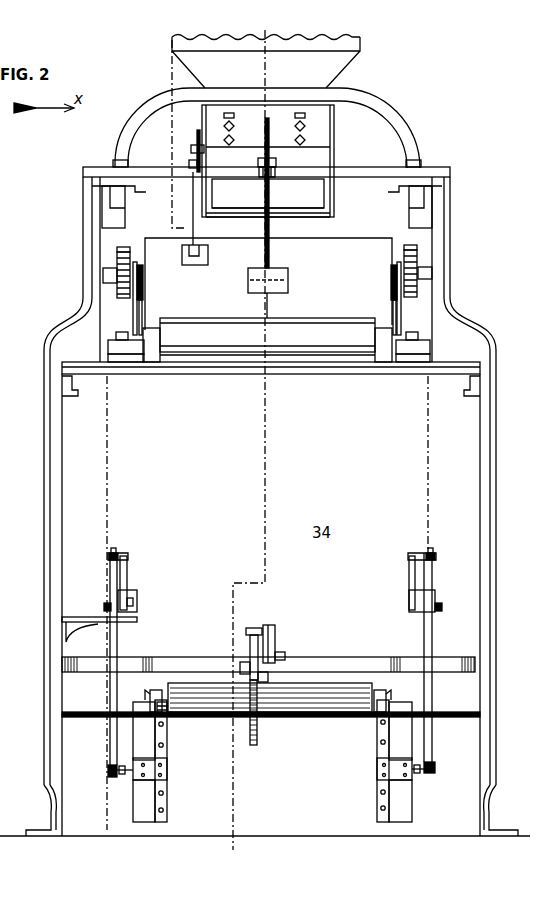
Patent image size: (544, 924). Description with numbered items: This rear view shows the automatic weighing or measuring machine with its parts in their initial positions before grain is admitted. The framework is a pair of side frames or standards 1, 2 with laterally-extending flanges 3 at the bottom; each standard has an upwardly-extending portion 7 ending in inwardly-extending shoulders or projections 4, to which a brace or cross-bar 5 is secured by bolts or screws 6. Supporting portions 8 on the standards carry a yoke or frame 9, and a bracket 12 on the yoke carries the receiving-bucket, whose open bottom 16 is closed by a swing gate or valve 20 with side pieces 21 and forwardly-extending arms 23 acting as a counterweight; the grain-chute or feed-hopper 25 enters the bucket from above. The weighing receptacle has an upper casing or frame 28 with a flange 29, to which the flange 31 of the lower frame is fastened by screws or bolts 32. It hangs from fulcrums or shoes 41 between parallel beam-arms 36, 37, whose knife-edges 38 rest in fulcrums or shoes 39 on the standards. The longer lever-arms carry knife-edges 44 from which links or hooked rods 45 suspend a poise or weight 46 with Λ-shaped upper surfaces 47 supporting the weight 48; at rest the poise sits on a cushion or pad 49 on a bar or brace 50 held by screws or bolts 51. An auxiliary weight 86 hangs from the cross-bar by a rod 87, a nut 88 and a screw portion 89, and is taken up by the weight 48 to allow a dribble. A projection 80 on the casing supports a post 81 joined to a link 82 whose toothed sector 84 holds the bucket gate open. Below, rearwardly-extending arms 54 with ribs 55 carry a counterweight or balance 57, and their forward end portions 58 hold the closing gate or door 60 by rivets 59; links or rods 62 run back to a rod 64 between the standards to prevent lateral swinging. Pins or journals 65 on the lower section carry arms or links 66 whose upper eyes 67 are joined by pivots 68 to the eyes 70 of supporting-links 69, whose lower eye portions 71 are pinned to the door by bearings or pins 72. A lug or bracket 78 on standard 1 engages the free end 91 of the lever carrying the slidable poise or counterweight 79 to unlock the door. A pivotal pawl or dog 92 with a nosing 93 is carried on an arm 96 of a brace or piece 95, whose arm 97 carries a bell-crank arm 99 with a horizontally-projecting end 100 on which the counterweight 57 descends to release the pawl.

The side frame or standard 1 is at (50, 484).
The side frame or standard 2 is at (480, 483).
The laterally-extending flange 3 is at (505, 828).
The inwardly-extending shoulder or projection 4 is at (396, 185).
The brace or cross-bar 5 is at (374, 172).
The bolt or screw 6 is at (113, 165).
The upwardly-extending portion 7 is at (88, 203).
The supporting portion 8 is at (120, 222).
The yoke or frame 9 is at (147, 107).
The bracket 12 is at (310, 129).
The open bottom 16 is at (312, 212).
The swing gate or valve 20 is at (238, 214).
The side piece 21 is at (206, 192).
The forwardly-extending arm 23 is at (336, 128).
The grain-chute or feed-hopper 25 is at (340, 67).
The upper casing or frame 28 is at (268, 284).
The flange 29 is at (110, 348).
The flange of lower frame 31 is at (110, 358).
The screw or bolt 32 is at (433, 337).
The beam-arm 36 is at (120, 288).
The beam-arm 37 is at (417, 290).
The knife-edge 38 is at (117, 265).
The fulcrum or shoe 39 is at (103, 277).
The fulcrum or shoe 41 is at (138, 266).
The knife-edge 44 is at (144, 283).
The link or hooked rod 45 is at (143, 300).
The poise or weight 46 is at (200, 355).
The Λ-shaped upper surface 47 is at (153, 327).
The weight 48 is at (224, 330).
The cushion or pad 49 is at (327, 375).
The bar or brace 50 is at (292, 375).
The screw or bolt 51 is at (76, 388).
The rearwardly-extending arm 54 is at (167, 714).
The rib 55 is at (157, 692).
The counterweight or balance 57 is at (270, 697).
The forward end portion 58 is at (168, 785).
The rivet 59 is at (165, 746).
The closing gate or door 60 is at (272, 801).
The link or rod 62 is at (153, 712).
The rod 64 is at (271, 705).
The pin or journal 65 is at (105, 607).
The arm or link 66 is at (128, 578).
The upper eye 67 is at (128, 563).
The pivot 68 is at (108, 559).
The supporting-link 69 is at (110, 585).
The eye 70 is at (114, 552).
The lower eye portion 71 is at (112, 778).
The bearing or pin 72 is at (107, 770).
The lug or bracket 78 is at (96, 624).
The poise or counterweight 79 is at (138, 593).
The projection 80 is at (204, 268).
The post 81 is at (190, 163).
The link 82 is at (204, 150).
The toothed sector 84 is at (195, 142).
The auxiliary weight 86 is at (290, 282).
The rod 87 is at (271, 253).
The nut 88 is at (277, 161).
The screw portion 89 is at (265, 139).
The free end 91 is at (134, 602).
The pivotal pawl or dog 92 is at (250, 623).
The nosing 93 is at (268, 677).
The brace or piece 95 is at (285, 655).
The arm 96 is at (276, 632).
The arm 97 is at (245, 653).
The arm 99 is at (250, 666).
The horizontally-projecting end 100 is at (253, 745).